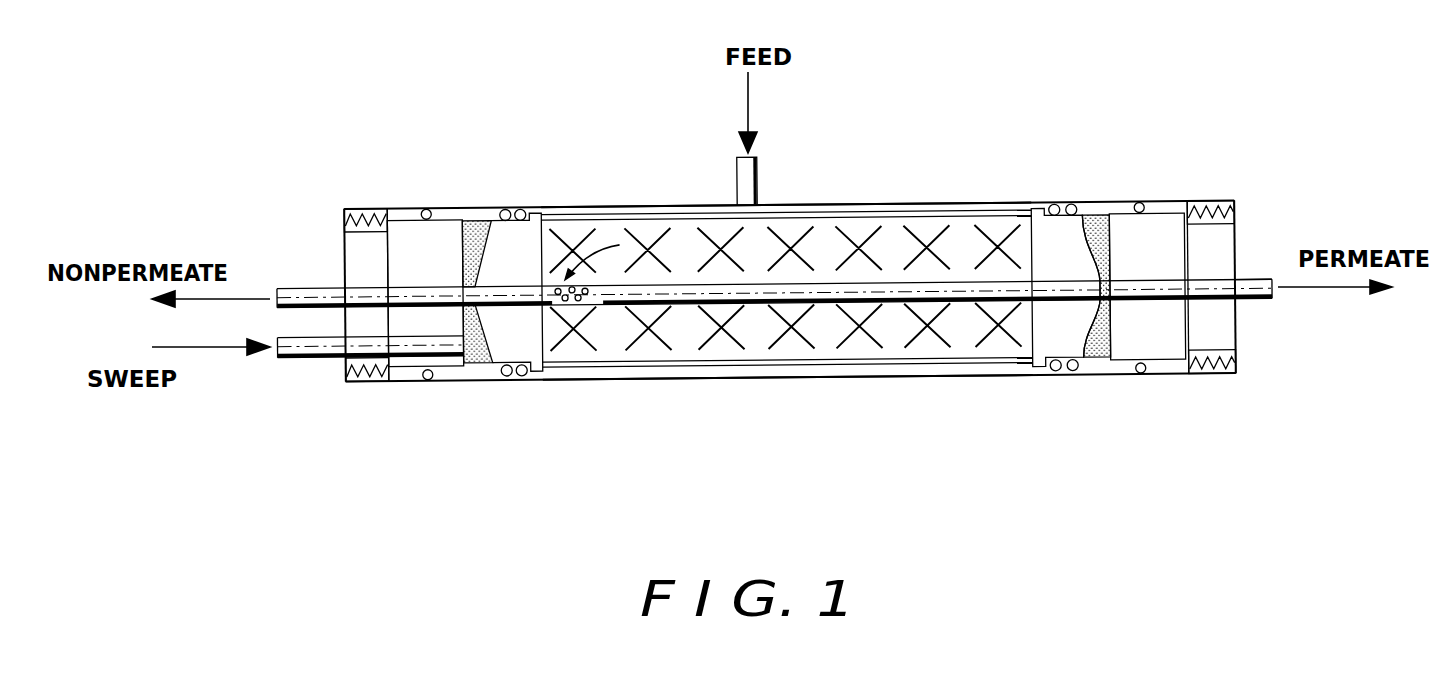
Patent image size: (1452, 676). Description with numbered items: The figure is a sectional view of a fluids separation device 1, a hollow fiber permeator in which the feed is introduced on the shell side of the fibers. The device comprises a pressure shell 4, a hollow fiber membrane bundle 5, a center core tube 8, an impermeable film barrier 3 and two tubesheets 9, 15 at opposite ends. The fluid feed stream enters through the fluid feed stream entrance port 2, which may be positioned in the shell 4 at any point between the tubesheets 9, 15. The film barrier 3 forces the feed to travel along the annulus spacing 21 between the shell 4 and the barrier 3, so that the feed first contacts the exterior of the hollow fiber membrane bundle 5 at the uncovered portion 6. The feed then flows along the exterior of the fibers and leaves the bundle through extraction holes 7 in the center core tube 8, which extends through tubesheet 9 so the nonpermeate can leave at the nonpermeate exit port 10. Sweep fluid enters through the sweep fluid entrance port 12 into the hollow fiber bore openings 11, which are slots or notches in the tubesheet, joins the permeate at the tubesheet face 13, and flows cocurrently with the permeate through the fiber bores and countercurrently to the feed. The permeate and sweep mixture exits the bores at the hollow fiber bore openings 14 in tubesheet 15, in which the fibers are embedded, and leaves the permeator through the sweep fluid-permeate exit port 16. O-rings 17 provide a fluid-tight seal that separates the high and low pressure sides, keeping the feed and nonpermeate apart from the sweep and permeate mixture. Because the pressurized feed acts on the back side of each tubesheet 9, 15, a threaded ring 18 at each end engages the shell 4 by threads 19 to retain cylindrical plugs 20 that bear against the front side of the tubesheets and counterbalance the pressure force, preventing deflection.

The fluids separation device 1 is at (768, 402).
The fluid feed stream entrance port 2 is at (758, 185).
The film barrier 3 is at (827, 217).
The shell 4 is at (927, 204).
The hollow fiber membrane bundle 5 is at (865, 241).
The uncovered portion 6 is at (995, 218).
The holes 7 is at (568, 295).
The center core tube 8 is at (637, 292).
The tubesheet 9 is at (516, 336).
The nonpermeate exit port 10 is at (318, 289).
The hollow fiber bore openings 11 is at (476, 334).
The sweep fluid entrance port 12 is at (297, 357).
The tubesheet face 13 is at (560, 248).
The hollow fiber bore openings 14 is at (1102, 345).
The tubesheet 15 is at (1056, 331).
The sweep fluid-permeate exit port 16 is at (1255, 303).
The O-rings 17 is at (505, 206).
The threaded ring 18 is at (385, 206).
The threads 19 is at (366, 205).
The cylindrical plugs 20 is at (413, 357).
The annulus spacing 21 is at (643, 206).